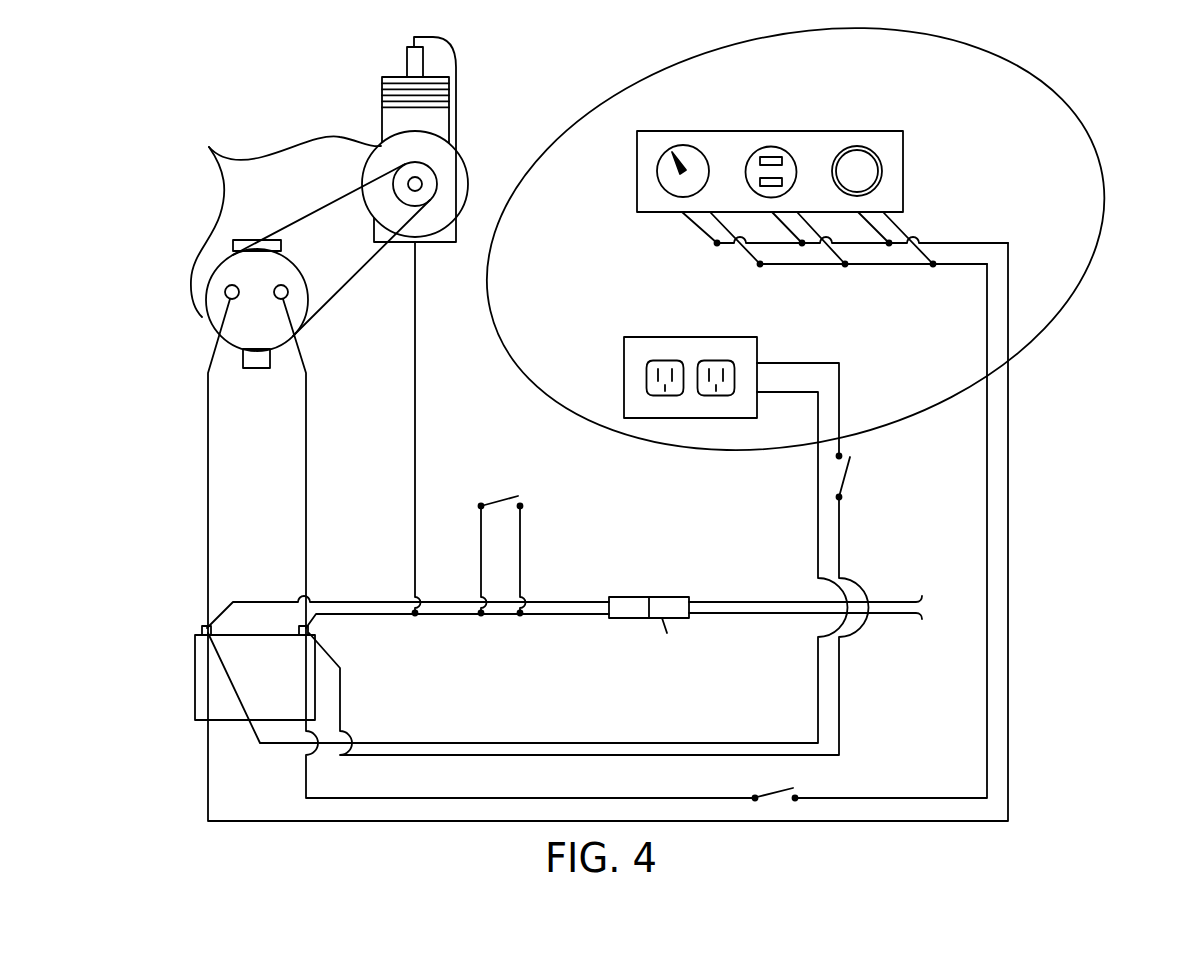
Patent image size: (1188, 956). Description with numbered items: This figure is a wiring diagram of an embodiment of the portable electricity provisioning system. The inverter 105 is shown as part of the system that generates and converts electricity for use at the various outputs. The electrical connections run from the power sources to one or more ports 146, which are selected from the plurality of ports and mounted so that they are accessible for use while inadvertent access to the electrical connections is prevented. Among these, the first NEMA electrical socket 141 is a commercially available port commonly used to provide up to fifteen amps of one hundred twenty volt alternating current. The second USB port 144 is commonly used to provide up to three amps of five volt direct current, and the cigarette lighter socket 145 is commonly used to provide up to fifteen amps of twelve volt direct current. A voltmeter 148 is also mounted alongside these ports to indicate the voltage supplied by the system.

The inverter 105 is at (209, 147).
The first NEMA 5-15 electrical socket 141 is at (740, 347).
The second USB port 144 is at (781, 147).
The cigarette lighter socket 145 is at (867, 148).
The one or more ports 146 is at (1060, 97).
The voltmeter 148 is at (670, 196).